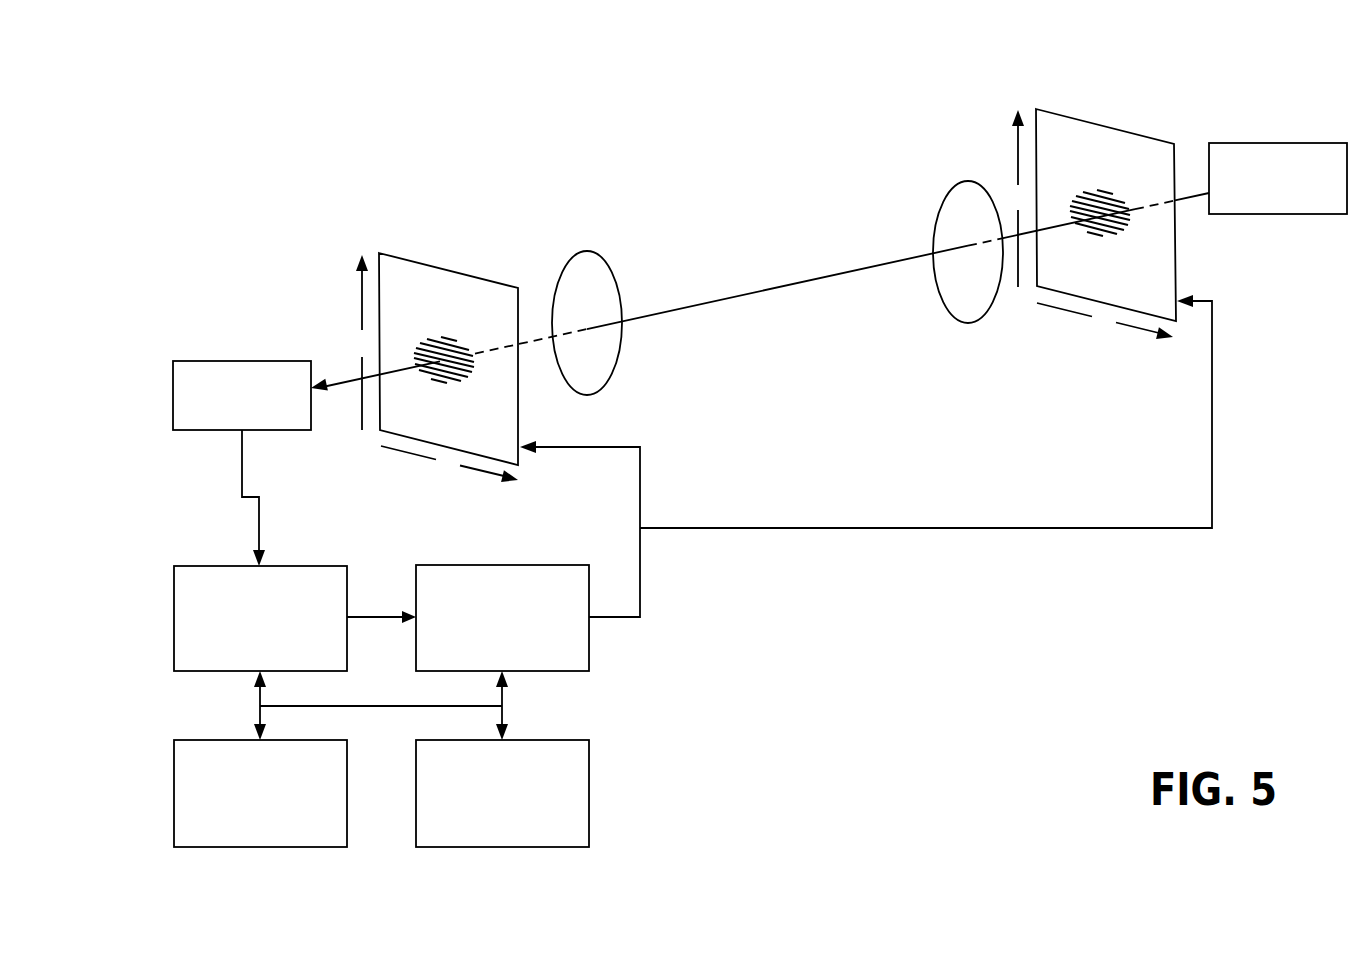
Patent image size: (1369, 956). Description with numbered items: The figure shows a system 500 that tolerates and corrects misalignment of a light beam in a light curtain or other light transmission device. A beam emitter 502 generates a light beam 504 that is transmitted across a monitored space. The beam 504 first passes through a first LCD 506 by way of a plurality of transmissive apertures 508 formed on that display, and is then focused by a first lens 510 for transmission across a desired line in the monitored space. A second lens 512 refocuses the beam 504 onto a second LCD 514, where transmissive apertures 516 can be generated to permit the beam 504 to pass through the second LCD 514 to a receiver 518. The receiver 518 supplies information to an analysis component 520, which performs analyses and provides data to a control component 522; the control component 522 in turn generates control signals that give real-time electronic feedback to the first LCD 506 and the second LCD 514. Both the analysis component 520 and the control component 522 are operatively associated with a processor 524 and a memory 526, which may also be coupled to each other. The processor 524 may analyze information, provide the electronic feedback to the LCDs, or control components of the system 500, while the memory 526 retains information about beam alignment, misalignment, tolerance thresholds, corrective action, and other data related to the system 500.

The system 500 is at (712, 66).
The beam emitter 502 is at (1262, 142).
The light beam 504 is at (828, 274).
The first LCD 506 is at (1087, 119).
The transmissive apertures 508 is at (1147, 230).
The first lens 510 is at (967, 181).
The second lens 512 is at (586, 252).
The second LCD 514 is at (433, 267).
The transmissive apertures 516 is at (480, 391).
The receiver 518 is at (243, 361).
The analysis component 520 is at (295, 566).
The control component 522 is at (500, 565).
The processor 524 is at (260, 847).
The memory 526 is at (485, 847).